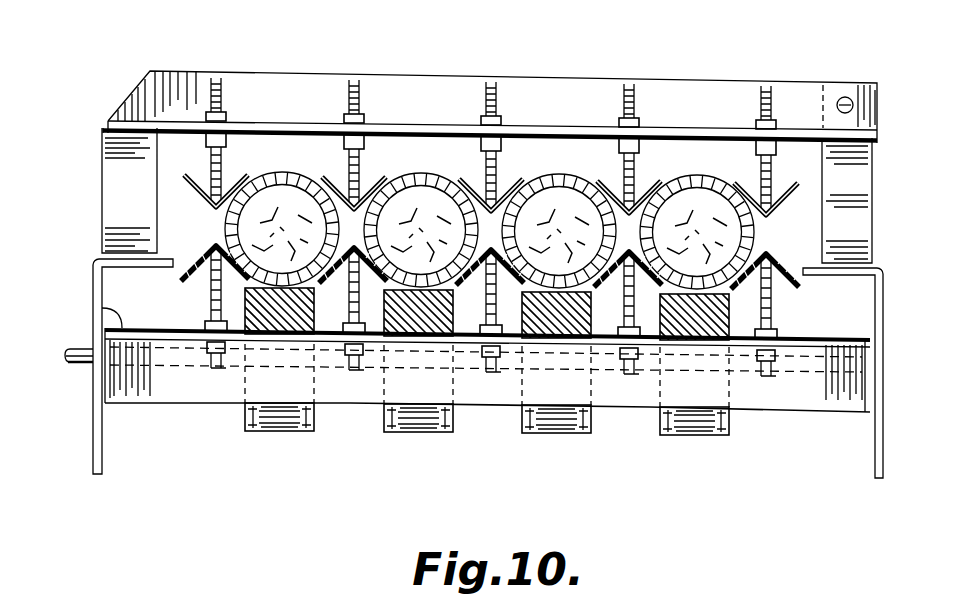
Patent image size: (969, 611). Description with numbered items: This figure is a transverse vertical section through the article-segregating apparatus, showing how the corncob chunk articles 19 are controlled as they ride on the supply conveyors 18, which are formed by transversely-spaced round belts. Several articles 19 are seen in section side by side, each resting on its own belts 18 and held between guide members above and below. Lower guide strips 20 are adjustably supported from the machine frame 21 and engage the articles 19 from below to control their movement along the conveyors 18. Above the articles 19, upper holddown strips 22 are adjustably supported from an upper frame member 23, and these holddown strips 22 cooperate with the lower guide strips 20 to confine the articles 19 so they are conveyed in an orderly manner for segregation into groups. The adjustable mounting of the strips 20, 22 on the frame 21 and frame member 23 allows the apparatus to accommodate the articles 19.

The supply conveyor 18 is at (248, 298).
The article 19 is at (272, 176).
The guide strip 20 is at (180, 275).
The machine frame 21 is at (93, 309).
The upper holddown strip 22 is at (366, 182).
The upper frame member 23 is at (245, 91).